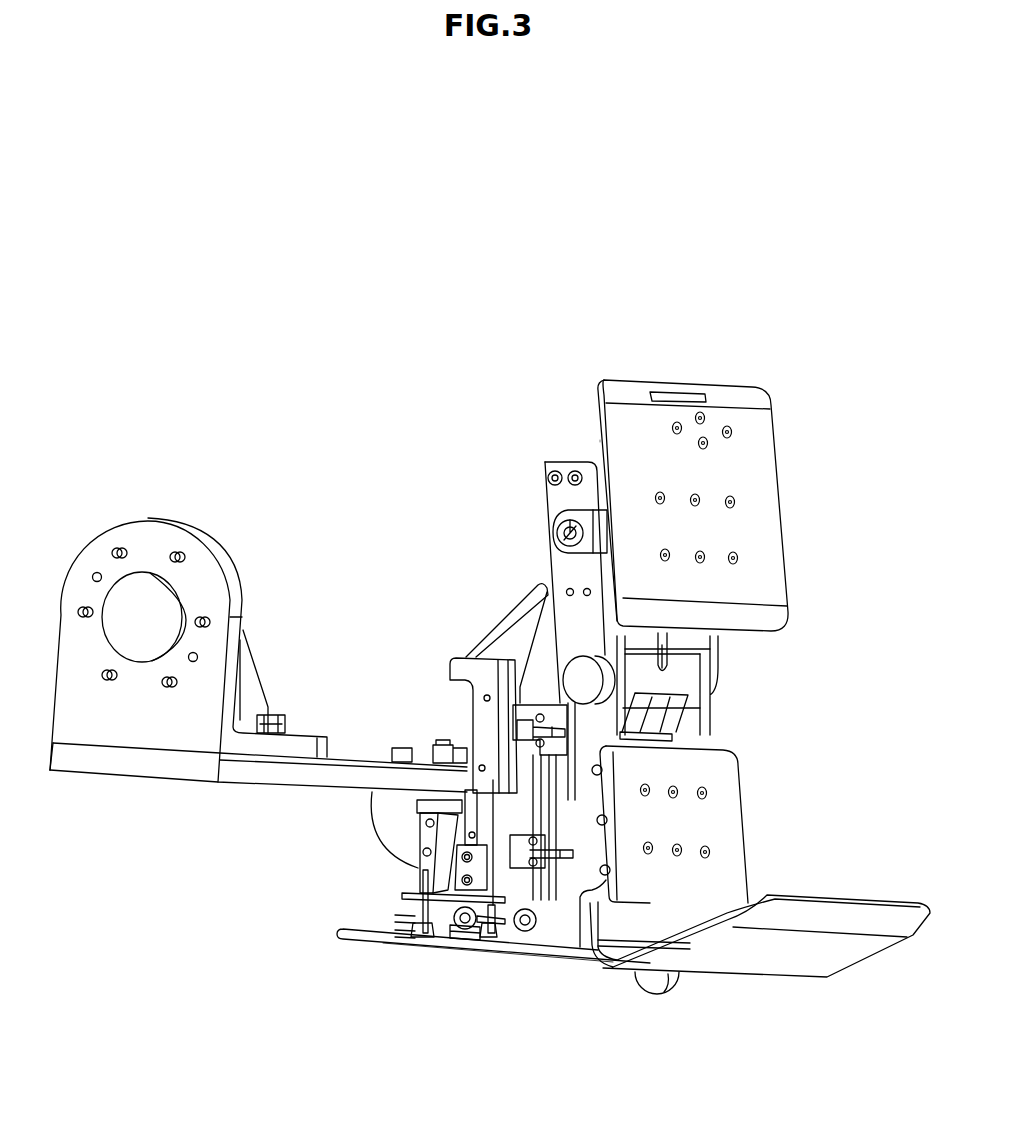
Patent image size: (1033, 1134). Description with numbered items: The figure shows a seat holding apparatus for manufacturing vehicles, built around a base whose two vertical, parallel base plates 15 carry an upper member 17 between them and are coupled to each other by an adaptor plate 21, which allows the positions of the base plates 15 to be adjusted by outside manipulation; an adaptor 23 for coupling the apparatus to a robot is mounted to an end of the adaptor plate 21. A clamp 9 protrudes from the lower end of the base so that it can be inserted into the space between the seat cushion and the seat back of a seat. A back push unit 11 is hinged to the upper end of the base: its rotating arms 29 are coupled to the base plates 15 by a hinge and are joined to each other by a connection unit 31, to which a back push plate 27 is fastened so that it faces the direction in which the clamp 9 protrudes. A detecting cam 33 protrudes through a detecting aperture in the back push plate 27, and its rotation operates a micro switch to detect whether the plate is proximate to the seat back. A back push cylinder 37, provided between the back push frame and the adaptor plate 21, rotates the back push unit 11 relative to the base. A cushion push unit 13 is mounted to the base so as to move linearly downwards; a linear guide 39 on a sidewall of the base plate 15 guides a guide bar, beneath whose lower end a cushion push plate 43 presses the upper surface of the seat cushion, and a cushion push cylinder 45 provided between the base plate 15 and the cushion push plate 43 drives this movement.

The clamp 9 is at (735, 823).
The back push unit 11 is at (593, 438).
The cushion push unit 13 is at (333, 933).
The base plates 15 is at (587, 725).
The upper member 17 is at (688, 668).
The adaptor plate 21 is at (270, 775).
The adaptor 23 is at (183, 542).
The back push plate 27 is at (757, 470).
The rotating arms 29 is at (552, 502).
The connection unit 31 is at (592, 530).
The detecting cam 33 is at (688, 392).
The back push cylinder 37 is at (515, 638).
The linear guide 39 is at (460, 820).
The cushion push plate 43 is at (463, 950).
The cushion push cylinder 45 is at (580, 950).